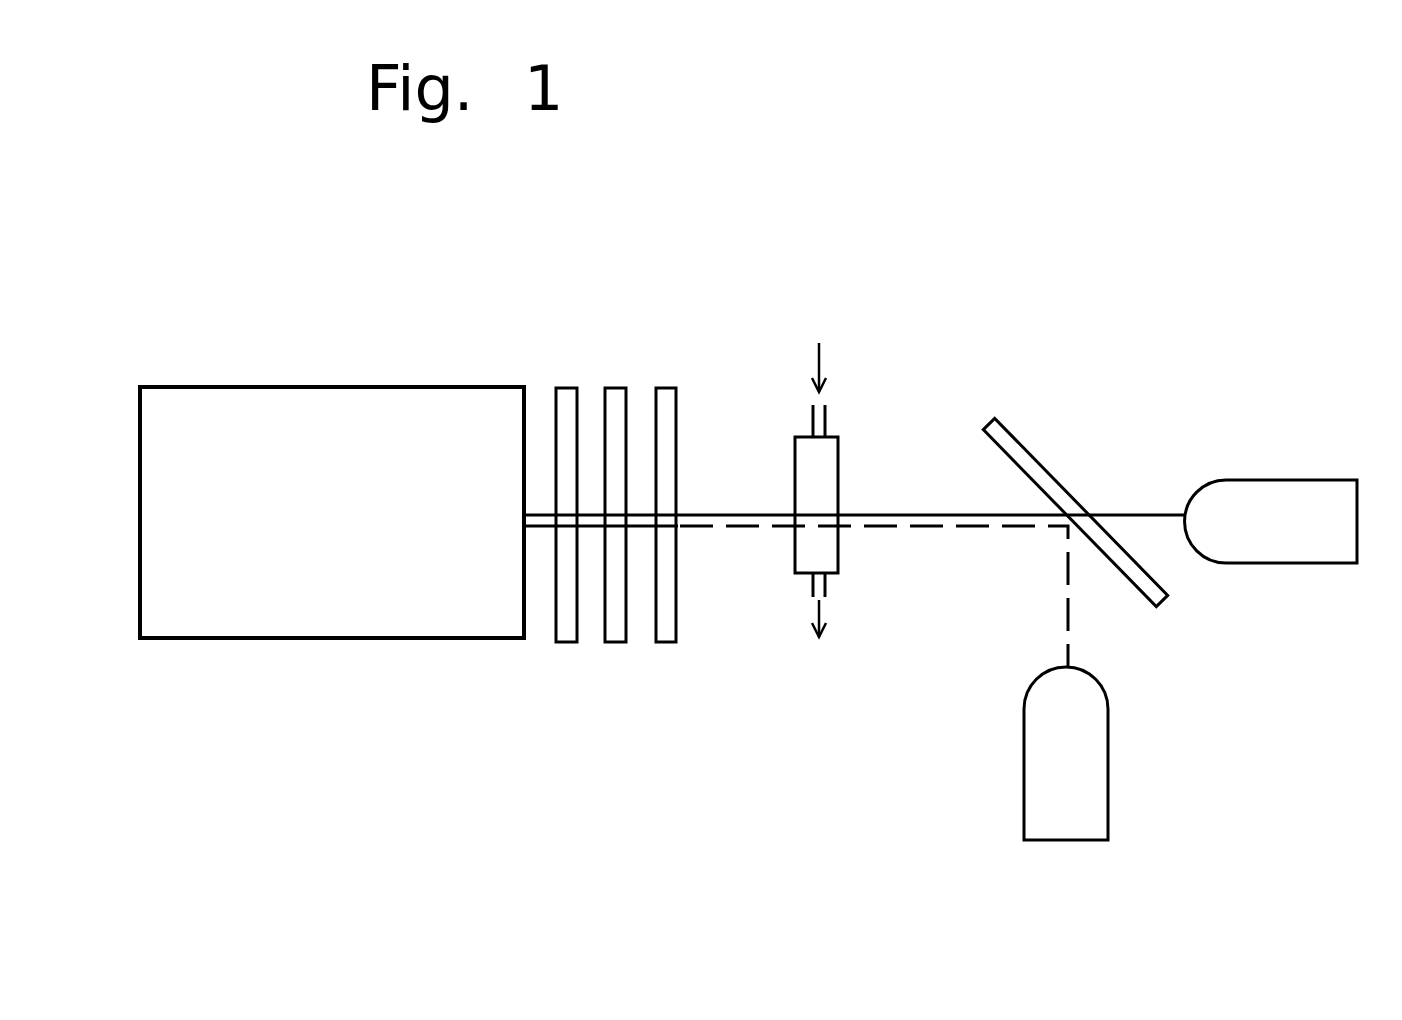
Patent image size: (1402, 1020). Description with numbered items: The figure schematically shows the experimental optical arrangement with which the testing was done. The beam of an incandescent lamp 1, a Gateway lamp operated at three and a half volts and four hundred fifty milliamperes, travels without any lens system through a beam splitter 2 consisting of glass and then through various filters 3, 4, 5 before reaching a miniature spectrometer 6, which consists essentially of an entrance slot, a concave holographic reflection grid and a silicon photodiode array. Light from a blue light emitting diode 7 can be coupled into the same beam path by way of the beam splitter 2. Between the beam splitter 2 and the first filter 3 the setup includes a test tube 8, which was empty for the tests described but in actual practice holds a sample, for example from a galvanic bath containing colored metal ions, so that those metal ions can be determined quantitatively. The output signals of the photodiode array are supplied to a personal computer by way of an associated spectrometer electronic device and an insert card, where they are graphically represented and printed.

The incandescent lamp 1 is at (1257, 540).
The beam splitter 2 is at (1023, 460).
The first filter 3 is at (667, 397).
The filter 4 is at (617, 397).
The filter 5 is at (568, 397).
The miniature spectrometer 6 is at (320, 535).
The blue light emitting diode 7 is at (1052, 780).
The test tube 8 is at (833, 430).